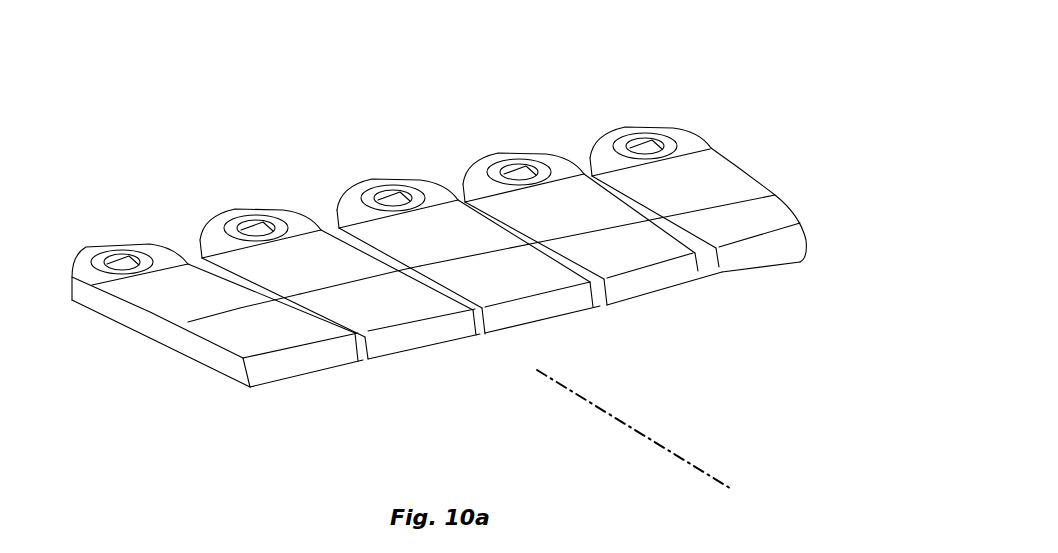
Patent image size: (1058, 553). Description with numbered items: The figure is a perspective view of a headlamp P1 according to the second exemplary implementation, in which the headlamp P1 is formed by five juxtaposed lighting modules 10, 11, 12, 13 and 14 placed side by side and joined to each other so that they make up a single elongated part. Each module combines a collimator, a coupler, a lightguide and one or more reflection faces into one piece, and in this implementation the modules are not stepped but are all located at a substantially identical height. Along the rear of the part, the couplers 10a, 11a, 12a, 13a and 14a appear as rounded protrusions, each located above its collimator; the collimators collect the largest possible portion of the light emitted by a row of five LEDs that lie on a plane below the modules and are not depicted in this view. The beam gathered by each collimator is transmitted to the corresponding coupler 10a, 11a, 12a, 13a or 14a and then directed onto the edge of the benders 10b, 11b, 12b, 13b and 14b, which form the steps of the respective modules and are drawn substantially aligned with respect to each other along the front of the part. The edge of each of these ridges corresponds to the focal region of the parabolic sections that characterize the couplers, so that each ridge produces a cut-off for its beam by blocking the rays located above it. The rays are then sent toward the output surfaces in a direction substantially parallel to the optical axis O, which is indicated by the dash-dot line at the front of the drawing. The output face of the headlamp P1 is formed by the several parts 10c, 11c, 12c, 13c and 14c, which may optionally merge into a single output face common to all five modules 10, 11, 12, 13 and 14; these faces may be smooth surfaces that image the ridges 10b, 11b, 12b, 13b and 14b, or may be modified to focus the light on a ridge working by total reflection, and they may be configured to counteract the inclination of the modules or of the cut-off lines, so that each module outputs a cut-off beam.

The lighting module 10 is at (185, 277).
The coupler 10a is at (118, 266).
The bender 10b is at (223, 313).
The output face part 10c is at (305, 358).
The lighting module 11 is at (325, 257).
The coupler 11a is at (243, 226).
The bender 11b is at (363, 280).
The output face part 11c is at (427, 335).
The lighting module 12 is at (455, 237).
The coupler 12a is at (383, 198).
The bender 12b is at (485, 255).
The output face part 12c is at (543, 307).
The lighting module 13 is at (577, 213).
The coupler 13a is at (510, 175).
The bender 13b is at (607, 230).
The output face part 13c is at (653, 280).
The lighting module 14 is at (703, 190).
The coupler 14a is at (632, 153).
The bender 14b is at (723, 207).
The output face part 14c is at (760, 245).
The headlamp P1 is at (754, 130).
The optical axis O is at (638, 430).